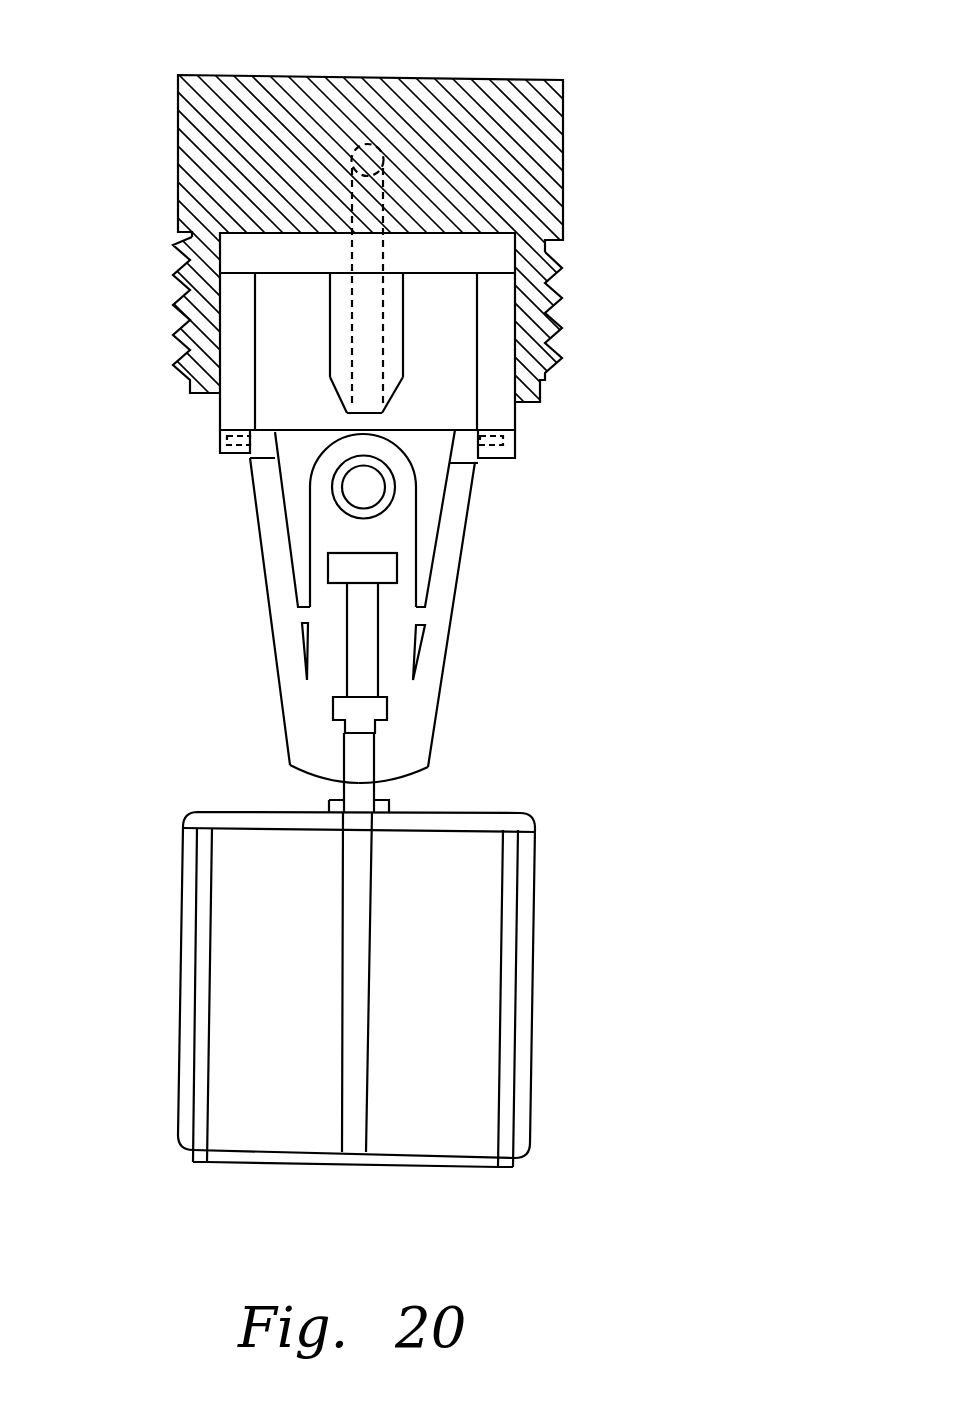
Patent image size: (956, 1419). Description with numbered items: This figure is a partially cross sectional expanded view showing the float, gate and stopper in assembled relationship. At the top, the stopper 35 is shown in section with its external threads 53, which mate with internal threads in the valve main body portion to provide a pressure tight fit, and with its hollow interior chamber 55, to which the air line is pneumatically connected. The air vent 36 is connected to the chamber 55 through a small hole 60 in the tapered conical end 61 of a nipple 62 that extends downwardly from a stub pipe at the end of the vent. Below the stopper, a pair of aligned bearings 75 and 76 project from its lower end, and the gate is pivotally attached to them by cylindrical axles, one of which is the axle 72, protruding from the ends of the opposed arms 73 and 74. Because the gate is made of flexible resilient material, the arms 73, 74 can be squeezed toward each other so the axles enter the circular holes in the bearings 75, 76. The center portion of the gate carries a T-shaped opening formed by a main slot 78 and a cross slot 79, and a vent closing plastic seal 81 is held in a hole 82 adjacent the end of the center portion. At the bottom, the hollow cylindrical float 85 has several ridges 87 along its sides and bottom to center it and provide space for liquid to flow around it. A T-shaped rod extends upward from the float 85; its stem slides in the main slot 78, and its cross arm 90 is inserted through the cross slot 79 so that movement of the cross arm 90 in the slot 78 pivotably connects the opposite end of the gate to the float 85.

The stopper 35 is at (627, 137).
The air vent 36 is at (378, 147).
The external threads 53 is at (558, 340).
The hollow interior chamber 55 is at (315, 342).
The small hole 60 is at (372, 418).
The tapered conical end 61 is at (337, 393).
The nipple 62 is at (405, 315).
The cylindrical axle 72 is at (228, 438).
The arm 73 is at (450, 642).
The arm 74 is at (275, 653).
The bearing 75 is at (222, 455).
The bearing 76 is at (513, 460).
The main slot 78 is at (360, 652).
The cross slot 79 is at (343, 568).
The vent closing seal 81 is at (358, 492).
The hole 82 is at (388, 505).
The float 85 is at (447, 1077).
The ridges 87 is at (342, 1045).
The cross arm 90 is at (337, 703).